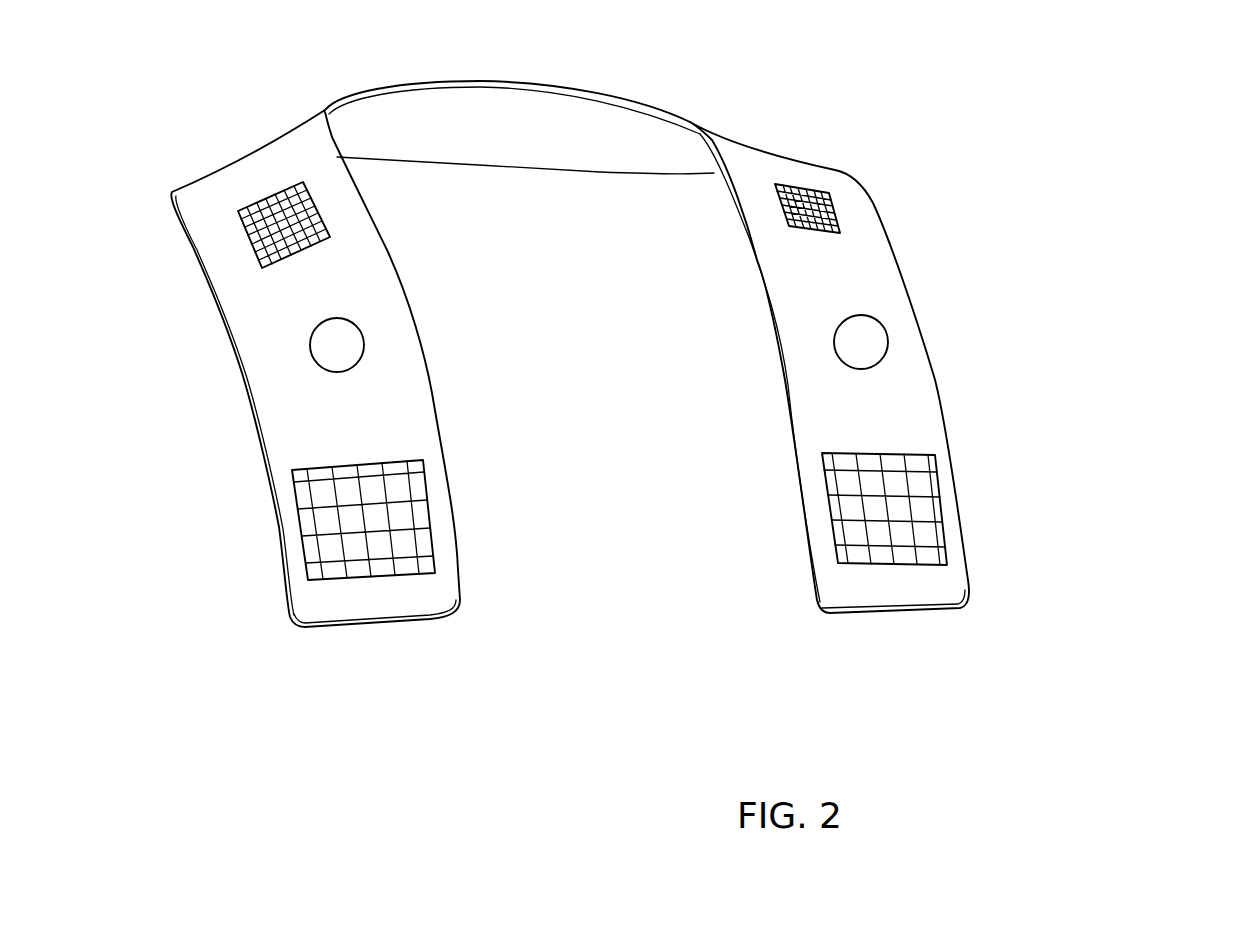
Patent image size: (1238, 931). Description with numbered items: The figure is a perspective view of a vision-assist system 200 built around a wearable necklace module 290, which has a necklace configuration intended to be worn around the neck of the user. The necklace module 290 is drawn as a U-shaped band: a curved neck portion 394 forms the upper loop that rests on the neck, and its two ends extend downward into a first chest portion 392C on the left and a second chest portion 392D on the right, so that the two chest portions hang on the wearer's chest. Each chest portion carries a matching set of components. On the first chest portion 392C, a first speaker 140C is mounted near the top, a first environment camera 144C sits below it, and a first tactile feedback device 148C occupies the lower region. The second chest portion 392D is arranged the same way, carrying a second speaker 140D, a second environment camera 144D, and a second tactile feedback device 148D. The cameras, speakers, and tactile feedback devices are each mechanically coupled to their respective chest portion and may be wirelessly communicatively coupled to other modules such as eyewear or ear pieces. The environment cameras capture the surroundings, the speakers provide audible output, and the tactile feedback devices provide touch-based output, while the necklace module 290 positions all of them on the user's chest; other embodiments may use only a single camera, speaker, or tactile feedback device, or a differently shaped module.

The vision-assist system 200 is at (676, 327).
The necklace module 290 is at (579, 327).
The neck portion 394 is at (482, 80).
The first chest portion 392C is at (265, 390).
The second chest portion 392D is at (873, 268).
The first speaker 140C is at (248, 248).
The second speaker 140D is at (797, 185).
The first environment camera 144C is at (337, 326).
The second environment camera 144D is at (846, 328).
The first tactile feedback device 148C is at (298, 523).
The second tactile feedback device 148D is at (947, 503).